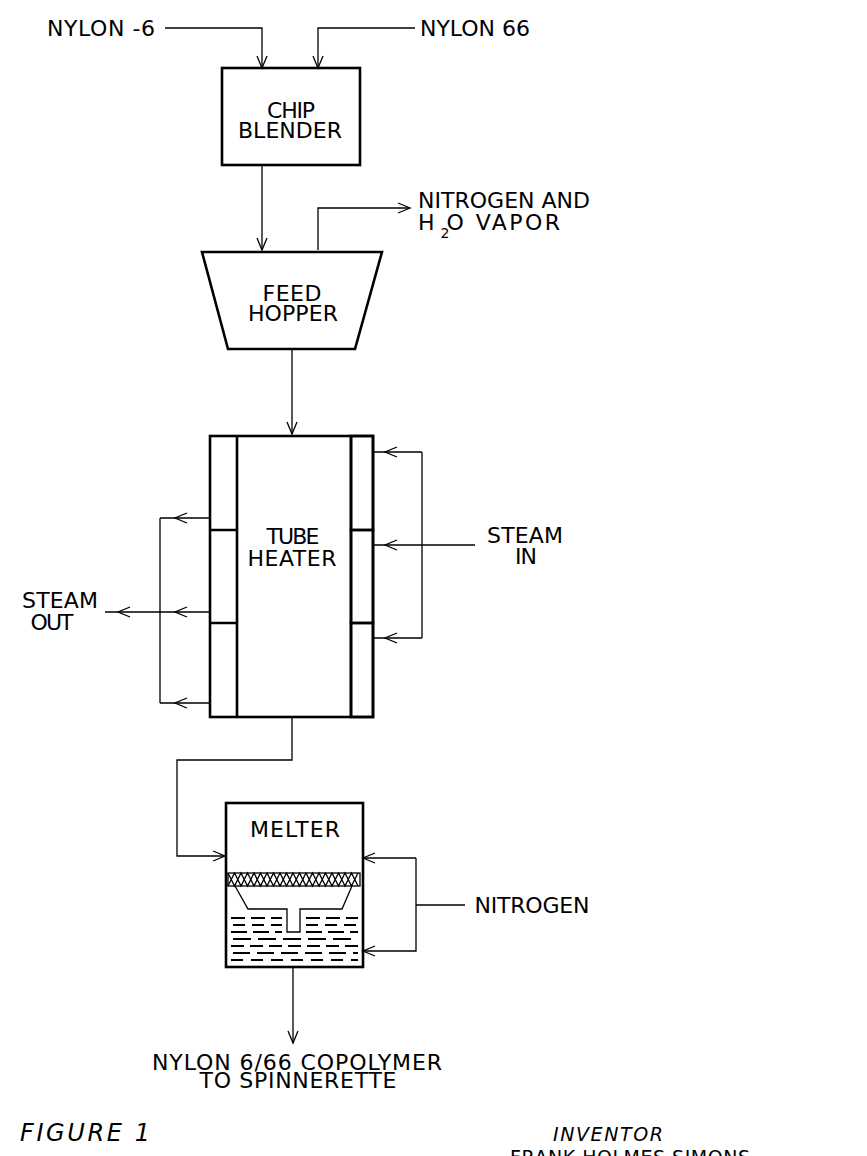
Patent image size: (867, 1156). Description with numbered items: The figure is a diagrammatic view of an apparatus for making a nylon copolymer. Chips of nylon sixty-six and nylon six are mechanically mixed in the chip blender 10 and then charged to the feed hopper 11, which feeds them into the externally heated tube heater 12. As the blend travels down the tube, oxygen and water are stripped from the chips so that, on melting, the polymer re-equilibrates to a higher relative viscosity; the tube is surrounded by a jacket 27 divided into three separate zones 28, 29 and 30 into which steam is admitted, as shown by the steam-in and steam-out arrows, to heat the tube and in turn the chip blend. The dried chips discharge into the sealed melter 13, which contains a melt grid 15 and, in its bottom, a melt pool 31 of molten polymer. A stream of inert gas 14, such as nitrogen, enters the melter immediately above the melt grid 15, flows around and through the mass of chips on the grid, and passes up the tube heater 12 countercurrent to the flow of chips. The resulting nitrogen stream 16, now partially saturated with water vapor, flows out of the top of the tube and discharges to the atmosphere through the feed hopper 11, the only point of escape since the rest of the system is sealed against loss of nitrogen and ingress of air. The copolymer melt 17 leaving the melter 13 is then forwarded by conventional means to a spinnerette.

The chip blender 10 is at (222, 155).
The feed hopper 11 is at (202, 262).
The tube heater 12 is at (337, 577).
The melter 13 is at (316, 884).
The inert gas stream 14 is at (437, 905).
The melt grid 15 is at (228, 877).
The nitrogen stream 16 is at (372, 208).
The copolymer melt 17 is at (293, 988).
The jacket 27 is at (381, 584).
The first jacket zone 28 is at (373, 442).
The second jacket zone 29 is at (375, 582).
The third jacket zone 30 is at (376, 664).
The melt pool 31 is at (222, 943).